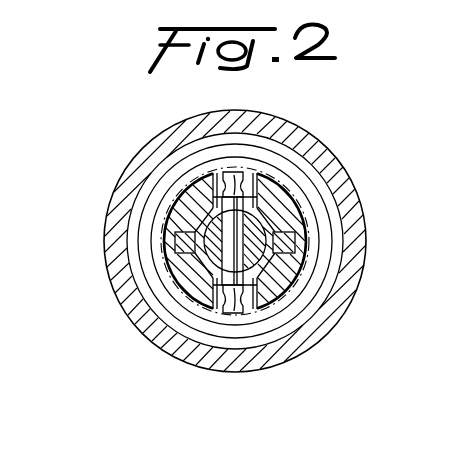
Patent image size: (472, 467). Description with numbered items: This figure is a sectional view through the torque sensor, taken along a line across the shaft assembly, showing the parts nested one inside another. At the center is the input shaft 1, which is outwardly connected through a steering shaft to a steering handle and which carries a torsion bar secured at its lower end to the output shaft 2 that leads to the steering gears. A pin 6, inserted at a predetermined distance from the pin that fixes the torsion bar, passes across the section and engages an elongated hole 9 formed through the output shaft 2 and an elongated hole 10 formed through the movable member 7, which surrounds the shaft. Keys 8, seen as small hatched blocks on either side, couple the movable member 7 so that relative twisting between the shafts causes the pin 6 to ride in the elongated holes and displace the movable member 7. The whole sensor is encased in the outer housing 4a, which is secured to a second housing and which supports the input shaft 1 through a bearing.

The housing 4a is at (310, 137).
The input shaft 1 is at (257, 223).
The output shaft 2 is at (297, 208).
The pin 6 is at (242, 312).
The movable member 7 is at (152, 277).
The keys 8 is at (175, 240).
The elongated hole 9 is at (280, 295).
The elongated hole 10 is at (262, 313).